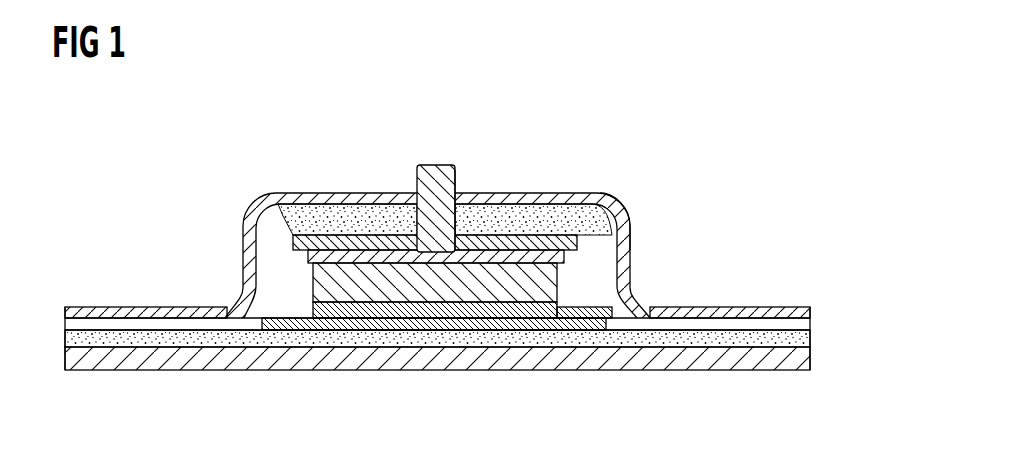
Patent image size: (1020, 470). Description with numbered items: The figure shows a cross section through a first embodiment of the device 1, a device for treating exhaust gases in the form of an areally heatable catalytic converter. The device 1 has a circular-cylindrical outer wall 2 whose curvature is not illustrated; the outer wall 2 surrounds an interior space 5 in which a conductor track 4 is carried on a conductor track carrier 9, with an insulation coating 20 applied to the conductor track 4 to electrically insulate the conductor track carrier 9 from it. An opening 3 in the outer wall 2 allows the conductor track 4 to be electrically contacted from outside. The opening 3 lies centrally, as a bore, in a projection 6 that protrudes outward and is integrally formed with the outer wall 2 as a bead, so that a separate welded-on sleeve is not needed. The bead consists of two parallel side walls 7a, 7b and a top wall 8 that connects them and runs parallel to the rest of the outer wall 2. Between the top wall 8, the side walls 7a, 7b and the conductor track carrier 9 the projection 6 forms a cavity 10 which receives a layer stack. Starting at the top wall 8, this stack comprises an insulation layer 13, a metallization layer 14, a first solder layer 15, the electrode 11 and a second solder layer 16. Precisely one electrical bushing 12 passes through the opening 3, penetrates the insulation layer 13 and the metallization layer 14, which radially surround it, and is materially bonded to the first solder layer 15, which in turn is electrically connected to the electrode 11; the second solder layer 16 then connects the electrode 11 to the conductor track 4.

The device 1 is at (680, 71).
The outer wall 2 is at (770, 306).
The opening 3 is at (458, 182).
The conductor track 4 is at (612, 325).
The interior space 5 is at (518, 421).
The projection 6 is at (268, 176).
The first side wall 7a is at (307, 256).
The second side wall 7b is at (628, 250).
The top wall 8 is at (336, 193).
The conductor track carrier 9 is at (310, 357).
The cavity 10 is at (293, 243).
The electrode 11 is at (540, 283).
The electrical bushing 12 is at (437, 183).
The insulation layer 13 is at (557, 213).
The metallization layer 14 is at (625, 212).
The first solder layer 15 is at (288, 225).
The second solder layer 16 is at (313, 308).
The insulation coating 20 is at (86, 345).